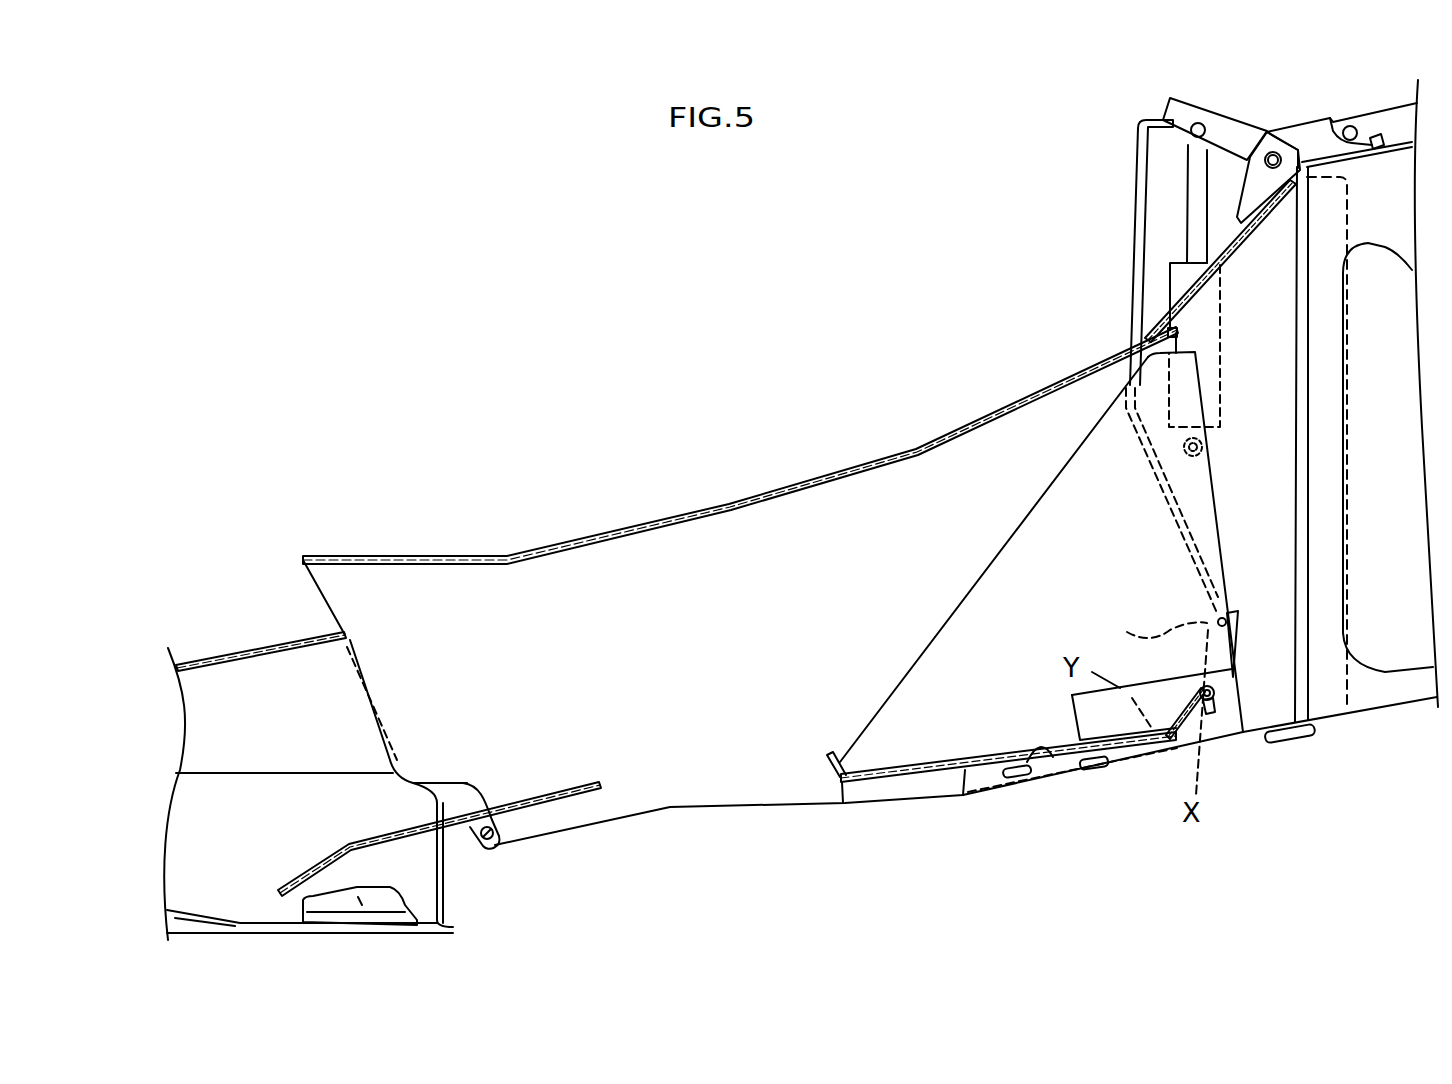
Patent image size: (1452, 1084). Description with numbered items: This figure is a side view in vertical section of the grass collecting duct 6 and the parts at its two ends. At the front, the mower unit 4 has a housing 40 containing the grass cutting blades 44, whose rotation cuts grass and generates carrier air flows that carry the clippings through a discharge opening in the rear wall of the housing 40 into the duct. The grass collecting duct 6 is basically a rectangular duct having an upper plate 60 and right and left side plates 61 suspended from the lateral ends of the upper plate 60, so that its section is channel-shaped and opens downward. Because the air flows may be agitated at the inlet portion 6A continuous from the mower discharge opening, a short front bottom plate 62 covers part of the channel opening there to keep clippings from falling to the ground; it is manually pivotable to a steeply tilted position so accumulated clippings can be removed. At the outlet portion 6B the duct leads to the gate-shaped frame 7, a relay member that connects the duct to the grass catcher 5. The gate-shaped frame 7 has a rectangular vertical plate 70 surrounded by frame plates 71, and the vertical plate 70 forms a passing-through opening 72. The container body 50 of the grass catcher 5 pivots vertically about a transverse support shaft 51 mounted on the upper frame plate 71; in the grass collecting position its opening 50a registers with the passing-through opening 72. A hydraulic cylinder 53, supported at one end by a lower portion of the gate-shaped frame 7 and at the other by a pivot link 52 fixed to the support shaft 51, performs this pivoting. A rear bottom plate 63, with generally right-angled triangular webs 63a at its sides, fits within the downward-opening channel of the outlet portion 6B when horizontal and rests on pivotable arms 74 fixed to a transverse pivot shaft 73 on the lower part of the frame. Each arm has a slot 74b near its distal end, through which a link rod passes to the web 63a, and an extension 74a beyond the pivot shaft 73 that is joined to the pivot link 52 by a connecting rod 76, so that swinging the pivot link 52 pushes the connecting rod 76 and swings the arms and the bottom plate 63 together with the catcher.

The mower unit 4 is at (245, 593).
The housing 40 is at (228, 660).
The grass cutting blades 44 is at (257, 920).
The grass catcher 5 is at (1362, 723).
The container body 50 is at (1377, 690).
The opening 50a is at (1290, 537).
The transverse support shaft 51 is at (1267, 130).
The pivot link 52 is at (1167, 110).
The hydraulic cylinder 53 is at (1167, 302).
The grass collecting duct 6 is at (685, 503).
The upper plate 60 is at (610, 537).
The side plates 61 is at (715, 785).
The front bottom plate 62 is at (513, 800).
The rear bottom plate 63 is at (938, 767).
The webs 63a is at (1010, 607).
The inlet portion 6A is at (457, 660).
The outlet portion 6B is at (1223, 493).
The gate-shaped frame 7 is at (1165, 227).
The vertical plate 70 is at (1230, 243).
The frame plates 71 is at (1299, 186).
The passing-through opening 72 is at (1250, 355).
The transverse pivot shaft 73 is at (1240, 675).
The pivotable arms 74 is at (1082, 760).
The extension 74a is at (1133, 628).
The slot 74b is at (1036, 757).
The connecting rod 76 is at (1137, 172).